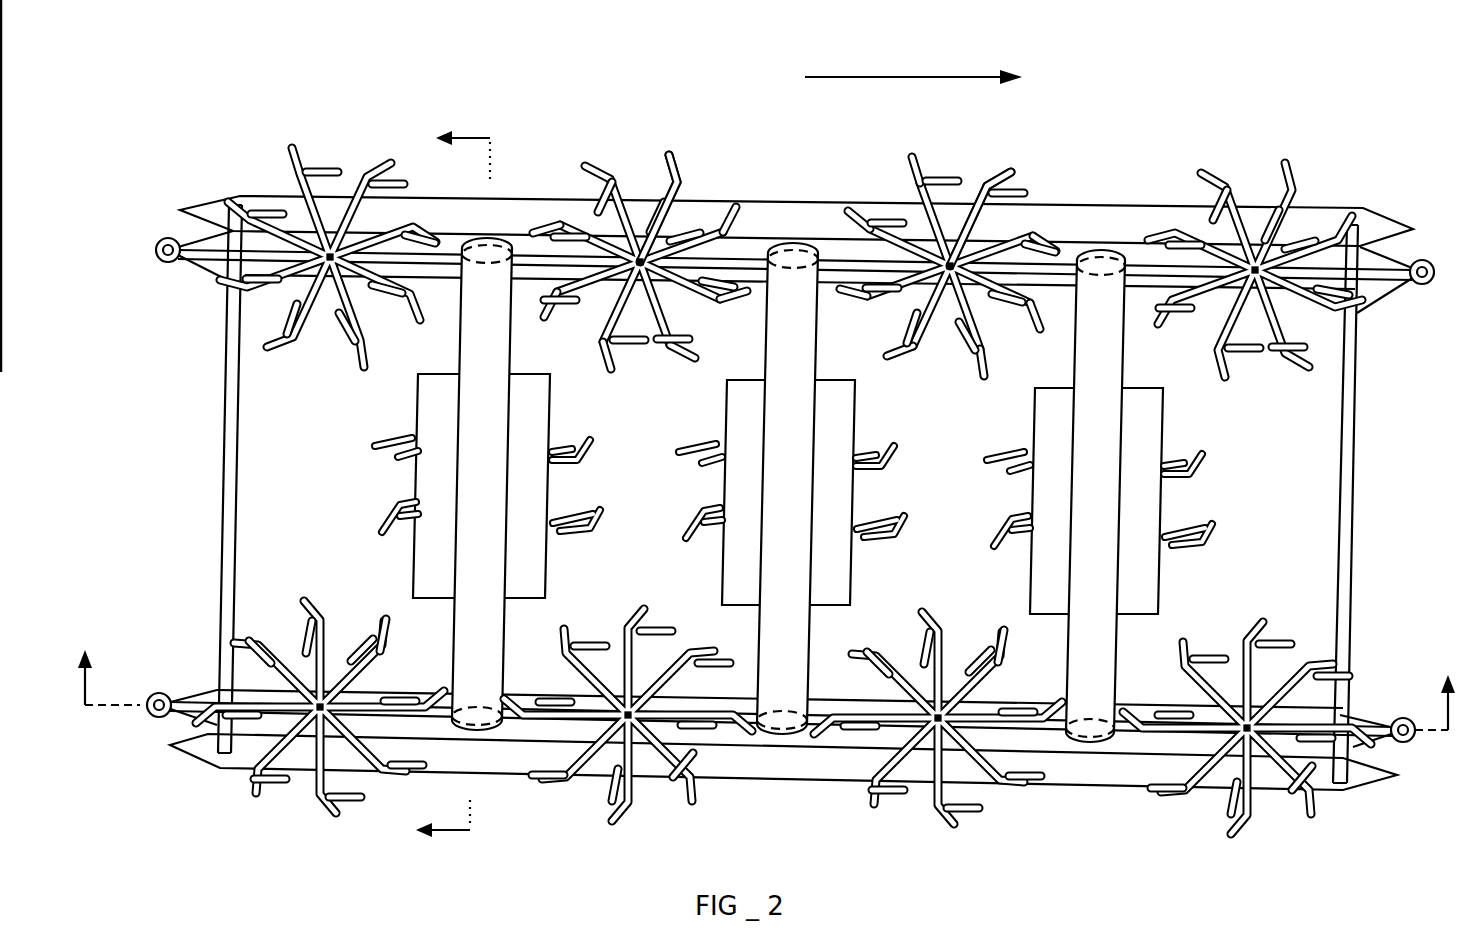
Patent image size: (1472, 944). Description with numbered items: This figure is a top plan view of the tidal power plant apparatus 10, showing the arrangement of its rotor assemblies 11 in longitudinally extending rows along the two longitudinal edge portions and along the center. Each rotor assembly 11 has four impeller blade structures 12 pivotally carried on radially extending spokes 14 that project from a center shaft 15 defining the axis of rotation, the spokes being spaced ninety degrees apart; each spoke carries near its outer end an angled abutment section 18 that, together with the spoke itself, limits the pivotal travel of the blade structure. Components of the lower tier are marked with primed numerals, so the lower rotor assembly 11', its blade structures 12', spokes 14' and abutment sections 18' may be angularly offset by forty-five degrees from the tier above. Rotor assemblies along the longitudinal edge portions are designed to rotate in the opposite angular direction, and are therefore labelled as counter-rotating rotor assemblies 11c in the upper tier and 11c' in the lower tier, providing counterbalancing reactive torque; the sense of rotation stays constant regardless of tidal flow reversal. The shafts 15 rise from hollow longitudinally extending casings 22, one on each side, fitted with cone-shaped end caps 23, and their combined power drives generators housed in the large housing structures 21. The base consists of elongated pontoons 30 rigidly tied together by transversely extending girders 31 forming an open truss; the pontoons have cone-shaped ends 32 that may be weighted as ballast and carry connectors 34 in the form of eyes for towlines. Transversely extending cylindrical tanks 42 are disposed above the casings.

The apparatus 10 is at (478, 104).
The rotor assembly 11 is at (795, 497).
The counter-rotating rotor assembly 11c is at (789, 487).
The lower-tier counter-rotating rotor assembly 11c' is at (706, 170).
The lower-tier rotor assembly 11' is at (1017, 189).
The impeller blade structure 12 is at (753, 244).
The lower-tier impeller blade structure 12' is at (839, 231).
The radially extending spoke 14 is at (741, 280).
The lower-tier radially extending spoke 14' is at (861, 251).
The center shaft 15 is at (668, 283).
The abutment section 18 is at (726, 272).
The lower-tier abutment section 18' is at (855, 236).
The housing structure 21 is at (555, 548).
The longitudinally extending casing 22 is at (1128, 740).
The cone-shaped end cap 23 is at (1372, 270).
The pontoon 30 is at (1335, 838).
The transversely extending girder 31 is at (226, 460).
The cone-shaped end 32 is at (1380, 212).
The connector 34 is at (1422, 285).
The cylindrical tank 42 is at (470, 636).